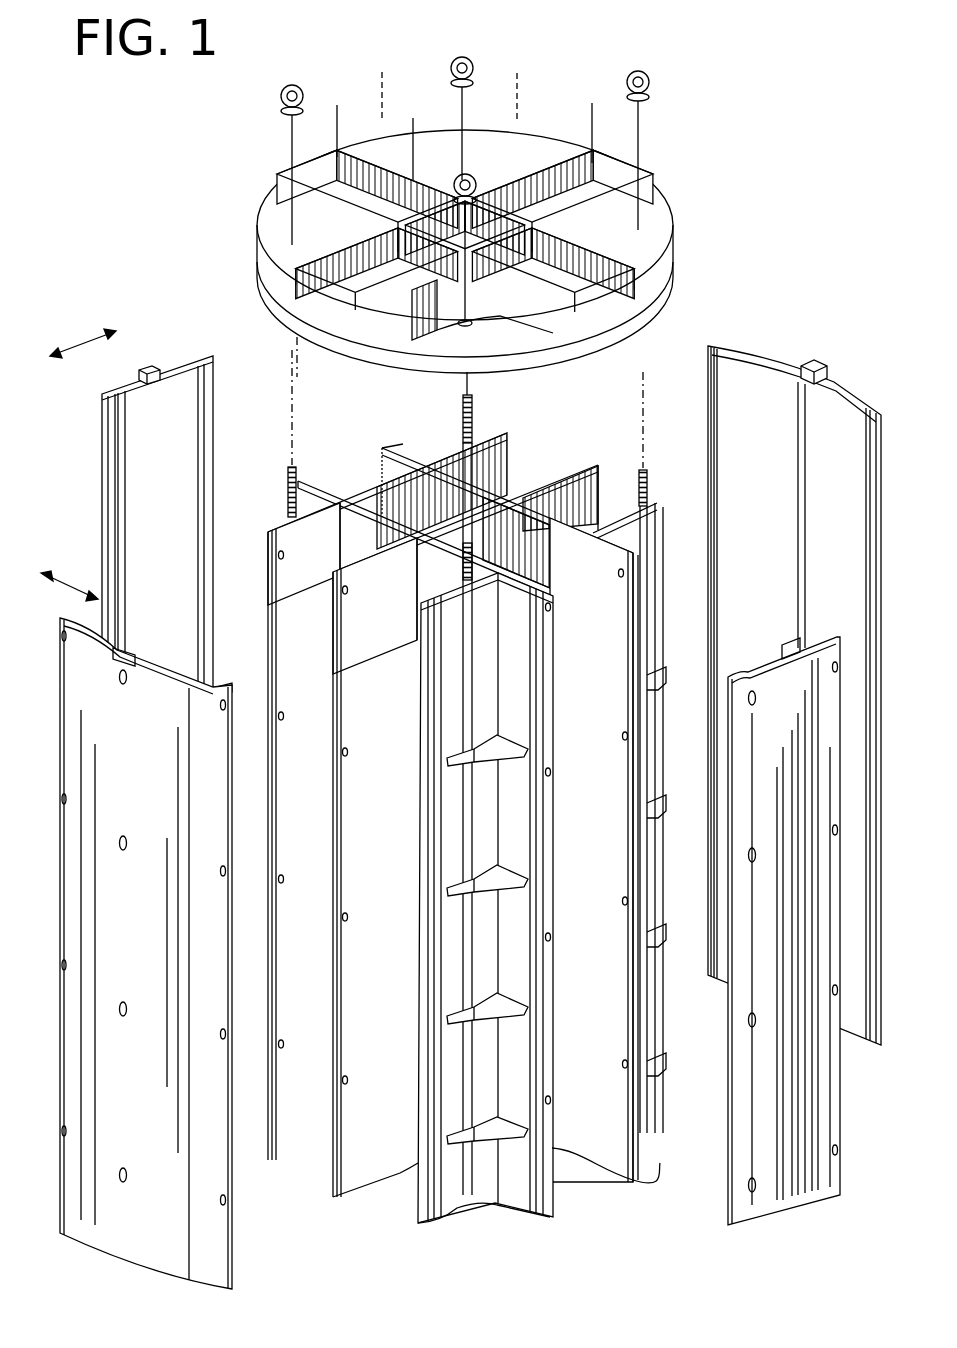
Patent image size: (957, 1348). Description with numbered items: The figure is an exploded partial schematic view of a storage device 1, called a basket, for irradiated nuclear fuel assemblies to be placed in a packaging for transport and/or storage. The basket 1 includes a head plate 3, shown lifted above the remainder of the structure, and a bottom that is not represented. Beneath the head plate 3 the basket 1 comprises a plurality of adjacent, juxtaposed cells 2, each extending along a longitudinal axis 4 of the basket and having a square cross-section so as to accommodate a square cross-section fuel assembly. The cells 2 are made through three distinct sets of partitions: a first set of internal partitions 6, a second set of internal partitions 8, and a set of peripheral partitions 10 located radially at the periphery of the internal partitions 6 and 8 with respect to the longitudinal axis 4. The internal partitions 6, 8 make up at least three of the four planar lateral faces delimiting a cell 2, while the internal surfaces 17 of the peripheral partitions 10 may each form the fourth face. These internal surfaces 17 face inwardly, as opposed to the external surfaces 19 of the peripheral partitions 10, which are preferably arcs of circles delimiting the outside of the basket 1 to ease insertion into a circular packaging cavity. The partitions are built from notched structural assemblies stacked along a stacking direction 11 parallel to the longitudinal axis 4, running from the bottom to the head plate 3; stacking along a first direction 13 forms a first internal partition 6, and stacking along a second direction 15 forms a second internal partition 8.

The storage device 1 is at (176, 190).
The cells 2 is at (360, 530).
The head plate 3 is at (660, 246).
The longitudinal axis 4 is at (385, 78).
The first set of internal partitions 6 is at (663, 1123).
The second set of internal partitions 8 is at (552, 1183).
The peripheral partitions 10 is at (180, 369).
The stacking direction 11 is at (57, 462).
The first direction 13 is at (84, 338).
The second direction 15 is at (80, 581).
The internal surfaces 17 is at (848, 447).
The external surfaces 19 is at (837, 379).